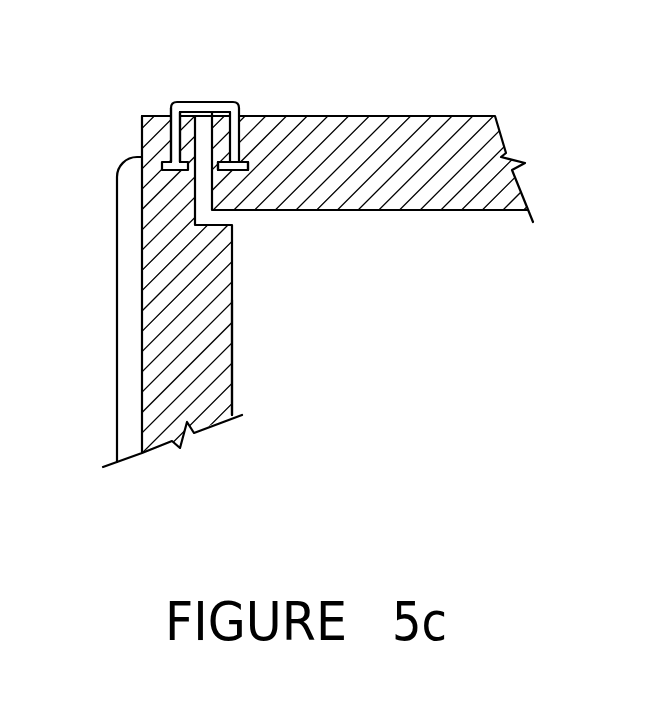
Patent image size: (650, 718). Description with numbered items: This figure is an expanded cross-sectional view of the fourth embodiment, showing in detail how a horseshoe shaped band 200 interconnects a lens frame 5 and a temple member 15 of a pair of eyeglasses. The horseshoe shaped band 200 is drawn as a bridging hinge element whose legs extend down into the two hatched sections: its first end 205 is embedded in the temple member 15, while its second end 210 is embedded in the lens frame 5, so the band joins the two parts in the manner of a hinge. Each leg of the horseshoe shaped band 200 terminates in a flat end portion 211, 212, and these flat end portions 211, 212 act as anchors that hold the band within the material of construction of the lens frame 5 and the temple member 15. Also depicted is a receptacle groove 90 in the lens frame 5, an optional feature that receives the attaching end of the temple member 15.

The lens frame 5 is at (232, 348).
The temple member 15 is at (397, 116).
The receptacle groove 90 is at (195, 230).
The horseshoe shaped band 200 is at (203, 140).
The first end 205 is at (238, 135).
The second end 210 is at (172, 138).
The flat end portion 211 is at (248, 172).
The flat end portion 212 is at (141, 220).